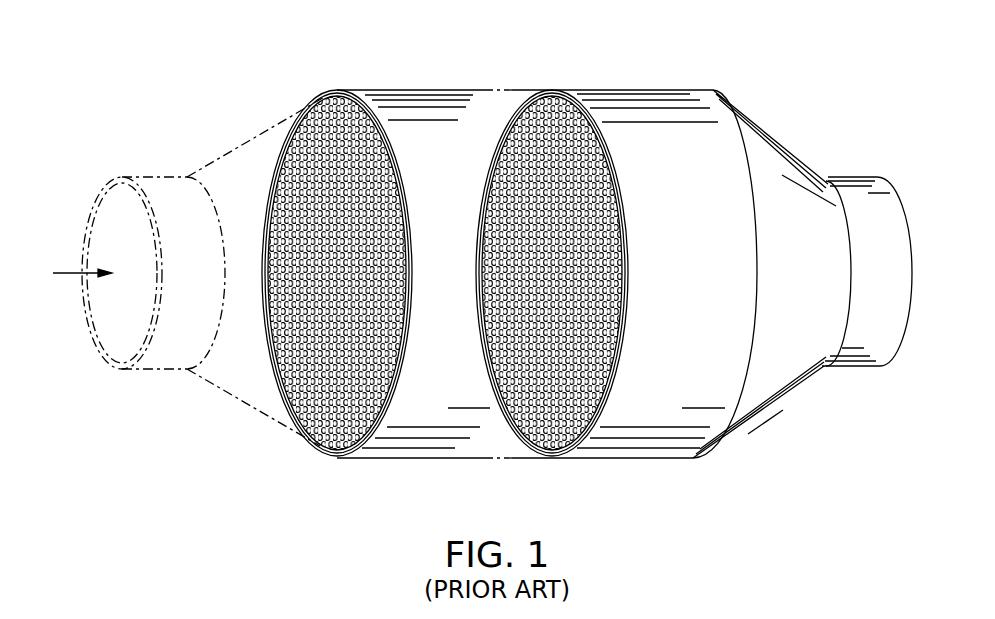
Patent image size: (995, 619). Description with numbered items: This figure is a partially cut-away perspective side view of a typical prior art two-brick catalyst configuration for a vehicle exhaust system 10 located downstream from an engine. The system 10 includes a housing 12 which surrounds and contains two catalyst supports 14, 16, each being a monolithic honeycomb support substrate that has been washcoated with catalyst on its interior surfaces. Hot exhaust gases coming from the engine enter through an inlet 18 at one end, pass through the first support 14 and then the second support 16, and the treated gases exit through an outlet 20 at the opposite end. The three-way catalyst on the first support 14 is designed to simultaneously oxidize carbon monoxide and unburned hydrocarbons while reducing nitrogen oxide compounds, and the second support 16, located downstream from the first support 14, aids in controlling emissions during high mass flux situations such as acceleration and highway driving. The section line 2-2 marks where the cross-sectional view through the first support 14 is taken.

The vehicle exhaust system 10 is at (482, 258).
The housing 12 is at (403, 89).
The first catalyst support 14 is at (428, 442).
The second catalyst support 16 is at (642, 440).
The inlet 18 is at (146, 372).
The outlet 20 is at (850, 177).
The section line 2-2 is at (327, 433).